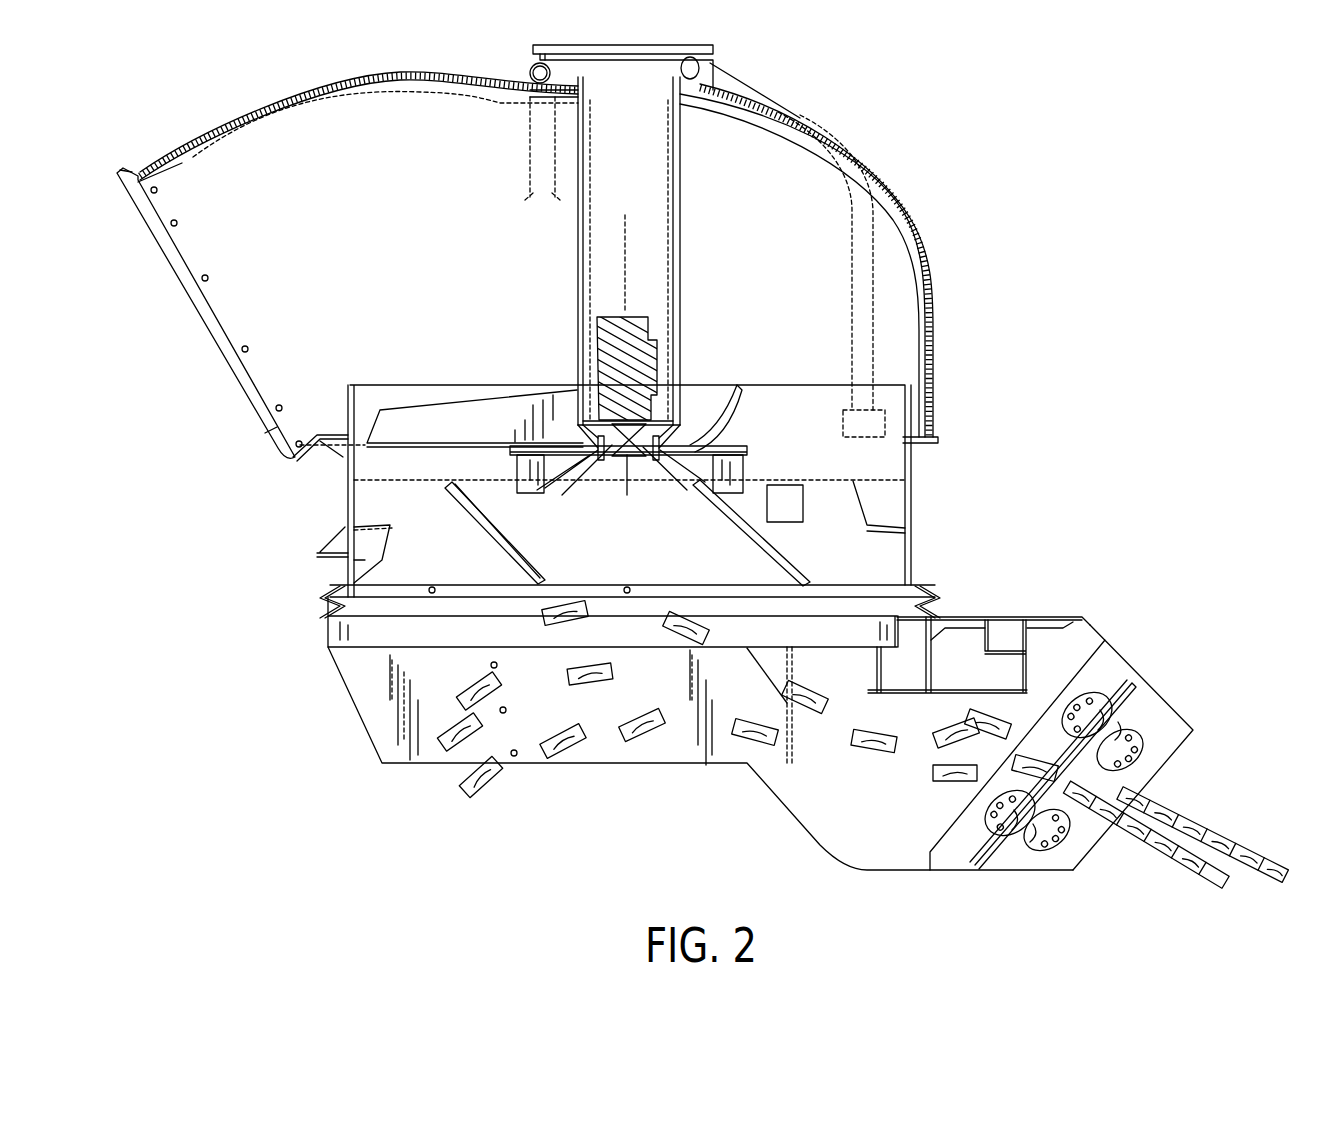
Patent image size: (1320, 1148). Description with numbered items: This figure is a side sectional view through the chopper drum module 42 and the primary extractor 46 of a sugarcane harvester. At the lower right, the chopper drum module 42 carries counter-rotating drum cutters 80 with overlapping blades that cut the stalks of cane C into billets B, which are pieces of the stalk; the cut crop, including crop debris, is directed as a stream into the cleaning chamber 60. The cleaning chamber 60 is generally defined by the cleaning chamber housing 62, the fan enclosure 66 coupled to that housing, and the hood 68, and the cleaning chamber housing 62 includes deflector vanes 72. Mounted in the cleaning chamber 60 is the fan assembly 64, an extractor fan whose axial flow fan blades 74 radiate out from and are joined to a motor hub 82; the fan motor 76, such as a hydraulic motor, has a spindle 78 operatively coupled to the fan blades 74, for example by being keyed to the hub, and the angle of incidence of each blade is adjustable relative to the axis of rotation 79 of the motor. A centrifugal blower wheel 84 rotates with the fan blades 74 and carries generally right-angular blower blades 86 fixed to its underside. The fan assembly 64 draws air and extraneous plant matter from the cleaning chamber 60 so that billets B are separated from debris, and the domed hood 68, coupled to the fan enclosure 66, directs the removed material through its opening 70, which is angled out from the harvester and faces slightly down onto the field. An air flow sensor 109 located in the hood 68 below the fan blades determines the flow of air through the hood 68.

The primary extractor 46 is at (1130, 170).
The hood 68 is at (880, 172).
The opening 70 is at (186, 292).
The axis of rotation 79 is at (642, 260).
The fan motor 76 is at (660, 343).
The fan assembly 64 is at (520, 360).
The motor hub 82 is at (582, 440).
The fan blades 74 is at (516, 424).
The fan enclosure 66 is at (347, 492).
The deflector vanes 72 is at (483, 518).
The blower blades 86 is at (574, 486).
The spindle 78 is at (626, 457).
The centrifugal blower wheel 84 is at (688, 488).
The air flow sensor 109 is at (805, 503).
The cleaning chamber housing 62 is at (343, 683).
The cleaning chamber 60 is at (543, 670).
The billets B is at (938, 776).
The chopper drum module 42 is at (1155, 726).
The cane C is at (1224, 835).
The counter-rotating drum cutters 80 is at (1100, 782).